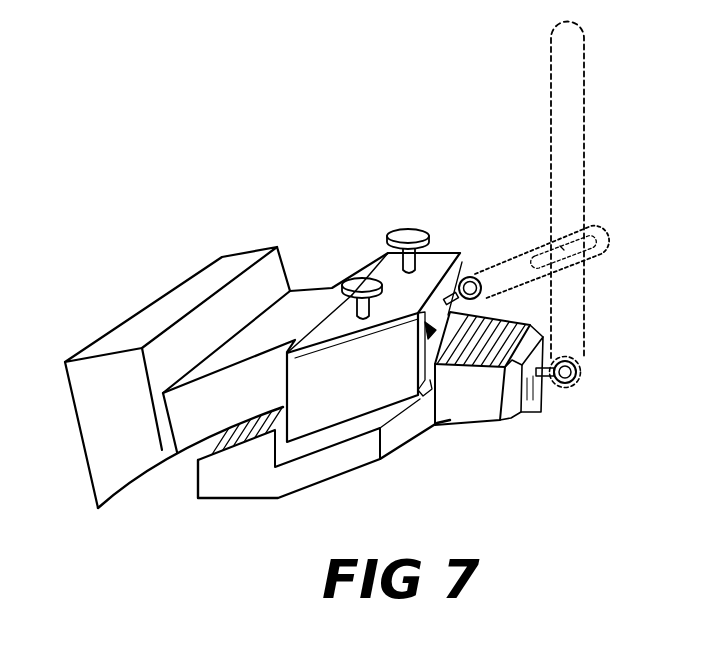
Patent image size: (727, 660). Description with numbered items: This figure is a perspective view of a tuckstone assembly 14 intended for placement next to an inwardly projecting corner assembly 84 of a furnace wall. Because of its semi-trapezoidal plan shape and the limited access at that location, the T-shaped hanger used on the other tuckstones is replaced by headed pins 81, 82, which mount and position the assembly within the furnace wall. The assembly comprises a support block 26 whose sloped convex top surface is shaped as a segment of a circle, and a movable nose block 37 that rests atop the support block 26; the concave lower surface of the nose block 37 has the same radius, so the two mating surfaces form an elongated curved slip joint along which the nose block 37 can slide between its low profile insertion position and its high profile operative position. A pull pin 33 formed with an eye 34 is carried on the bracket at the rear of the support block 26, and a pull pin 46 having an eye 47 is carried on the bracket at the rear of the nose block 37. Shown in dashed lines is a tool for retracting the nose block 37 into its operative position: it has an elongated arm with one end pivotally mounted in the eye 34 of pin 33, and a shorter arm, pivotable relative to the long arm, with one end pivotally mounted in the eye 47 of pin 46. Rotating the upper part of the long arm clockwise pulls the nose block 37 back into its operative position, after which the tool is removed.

The tuckstone assembly 14 is at (177, 544).
The support block 26 is at (340, 460).
The pull pin 33 is at (569, 388).
The eye 34 is at (578, 371).
The nose block 37 is at (323, 295).
The pull pin 46 is at (478, 279).
The eye 47 is at (483, 299).
The headed pin 81 is at (355, 318).
The headed pin 82 is at (433, 236).
The corner assembly 84 is at (163, 298).